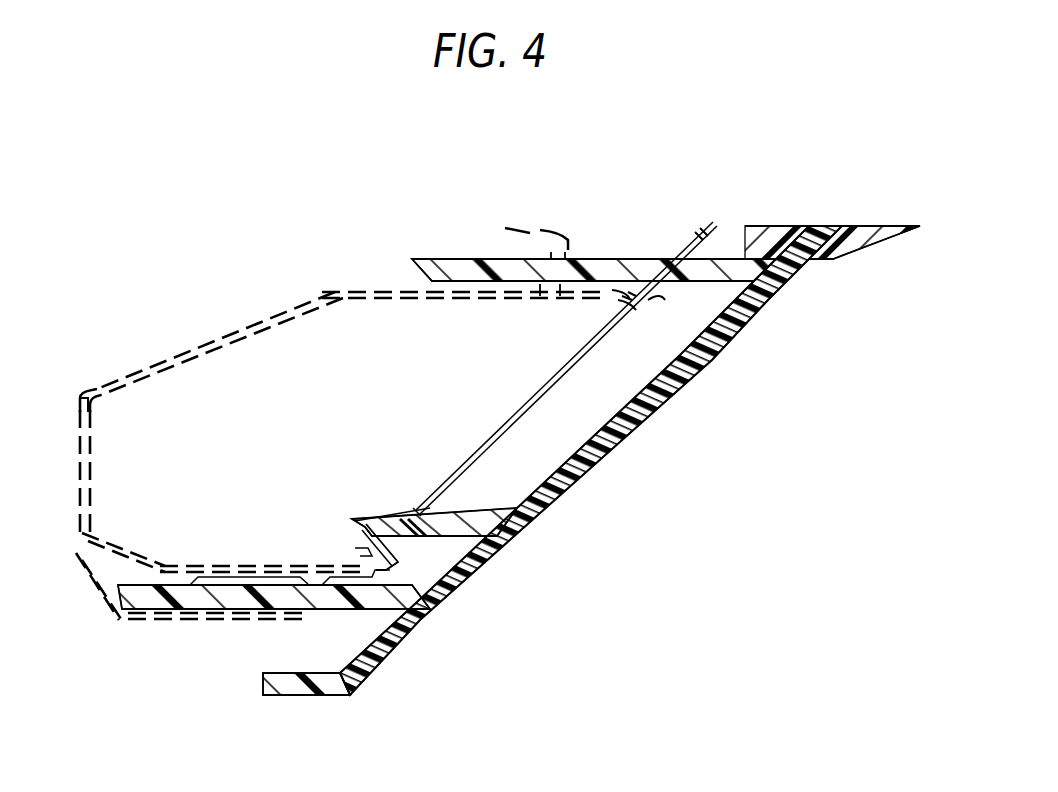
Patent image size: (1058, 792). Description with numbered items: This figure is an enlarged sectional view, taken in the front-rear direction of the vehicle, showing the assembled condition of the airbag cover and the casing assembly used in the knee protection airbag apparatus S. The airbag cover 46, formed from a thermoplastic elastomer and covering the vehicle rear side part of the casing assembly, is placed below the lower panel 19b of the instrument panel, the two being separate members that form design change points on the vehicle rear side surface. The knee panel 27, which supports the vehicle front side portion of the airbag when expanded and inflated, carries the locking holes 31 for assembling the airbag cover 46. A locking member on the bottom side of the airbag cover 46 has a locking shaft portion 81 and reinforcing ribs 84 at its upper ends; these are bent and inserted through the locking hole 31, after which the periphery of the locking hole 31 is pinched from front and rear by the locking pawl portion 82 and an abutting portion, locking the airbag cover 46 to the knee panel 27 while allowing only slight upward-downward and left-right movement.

The knee protection airbag apparatus S is at (110, 624).
The lower panel 19b is at (790, 230).
The knee panel 27 is at (473, 440).
The locking hole 31 is at (432, 510).
The reinforcing rib 84 is at (476, 508).
The locking pawl portion 82 is at (362, 522).
The locking shaft portion 81 is at (445, 540).
The airbag cover 46 is at (473, 612).